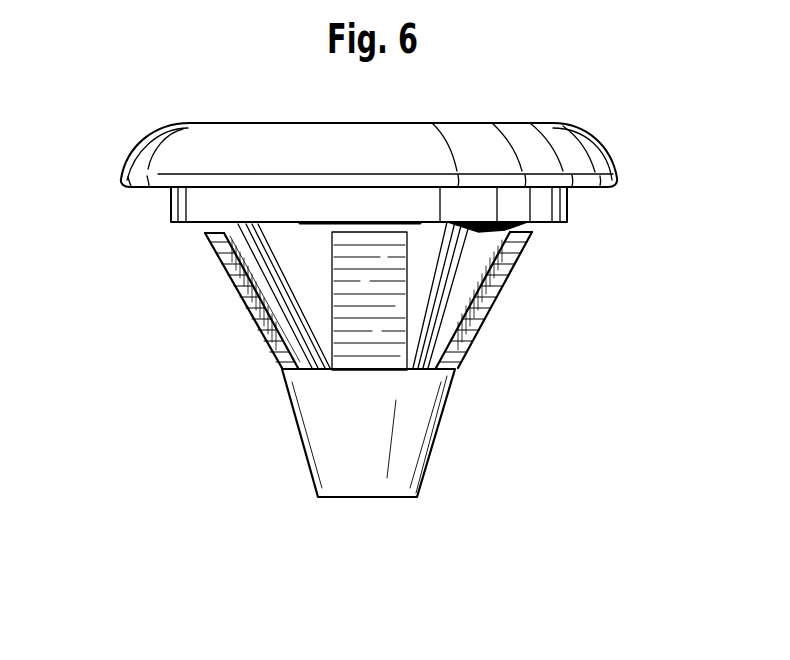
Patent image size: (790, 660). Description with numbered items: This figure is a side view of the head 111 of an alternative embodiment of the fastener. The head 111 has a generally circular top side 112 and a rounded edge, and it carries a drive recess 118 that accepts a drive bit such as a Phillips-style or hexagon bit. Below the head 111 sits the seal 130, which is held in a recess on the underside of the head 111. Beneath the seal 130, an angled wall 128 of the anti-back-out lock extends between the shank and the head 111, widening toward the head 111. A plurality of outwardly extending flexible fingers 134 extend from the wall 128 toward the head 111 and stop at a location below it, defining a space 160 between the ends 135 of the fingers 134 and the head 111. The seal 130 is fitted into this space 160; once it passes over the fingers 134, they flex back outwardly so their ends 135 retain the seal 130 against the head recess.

The head 111 is at (234, 123).
The drive recess 118 is at (367, 123).
The top side 112 is at (497, 123).
The seal 130 is at (570, 207).
The space 160 is at (210, 231).
The flexible fingers 134 is at (262, 338).
The ends of the fingers 135 is at (535, 230).
The angled wall 128 is at (283, 368).